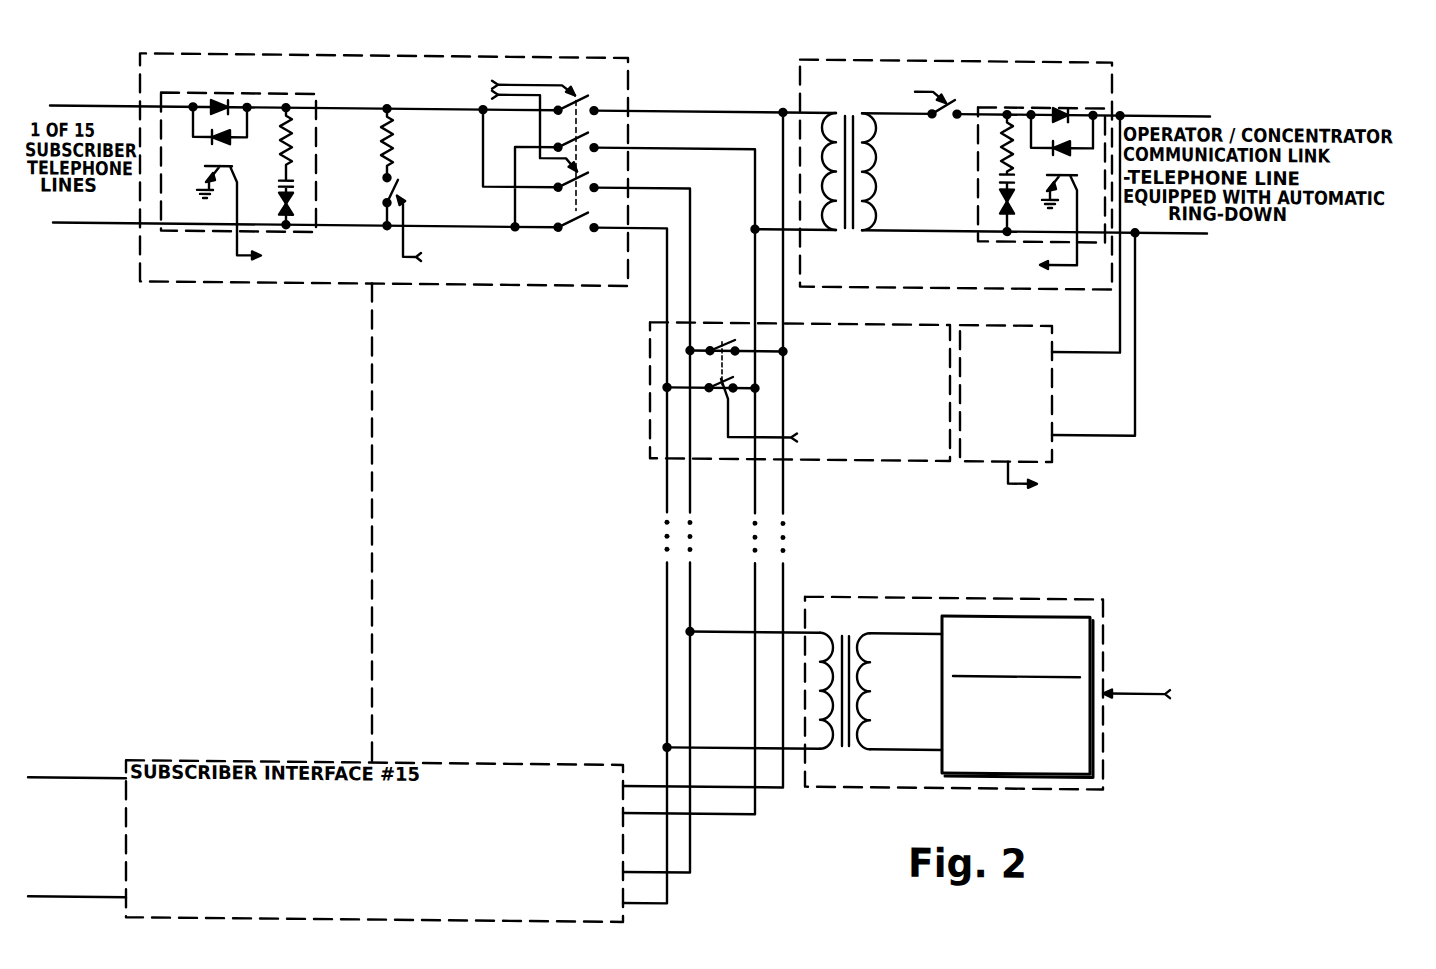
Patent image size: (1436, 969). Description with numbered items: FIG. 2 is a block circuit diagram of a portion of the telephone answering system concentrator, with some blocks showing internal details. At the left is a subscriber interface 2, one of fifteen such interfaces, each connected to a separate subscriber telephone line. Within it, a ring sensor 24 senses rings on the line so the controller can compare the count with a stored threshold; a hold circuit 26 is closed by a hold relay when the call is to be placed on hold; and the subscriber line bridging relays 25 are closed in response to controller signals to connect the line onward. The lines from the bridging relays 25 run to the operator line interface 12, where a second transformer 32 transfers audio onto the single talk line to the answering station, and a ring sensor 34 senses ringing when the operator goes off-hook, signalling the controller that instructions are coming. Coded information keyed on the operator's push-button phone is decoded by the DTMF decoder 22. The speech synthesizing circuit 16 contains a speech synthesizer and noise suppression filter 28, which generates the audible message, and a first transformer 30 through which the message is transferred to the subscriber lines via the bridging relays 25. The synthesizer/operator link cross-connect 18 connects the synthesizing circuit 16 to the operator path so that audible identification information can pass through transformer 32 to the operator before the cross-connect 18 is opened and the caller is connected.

The subscriber interface 2 is at (140, 52).
The ring sensor 24 is at (175, 229).
The hold circuit 26 is at (374, 190).
The subscriber line bridging relays 25 is at (574, 220).
The operator line interface 12 is at (1113, 62).
The second transformer 32 is at (858, 249).
The ring sensor 34 is at (1106, 98).
The synthesizer/operator link cross-connect 18 is at (851, 455).
The DTMF decoder 22 is at (988, 452).
The speech synthesizing circuit 16 is at (1030, 588).
The speech synthesizer and noise suppression filter 28 is at (1092, 625).
The first transformer 30 is at (857, 771).